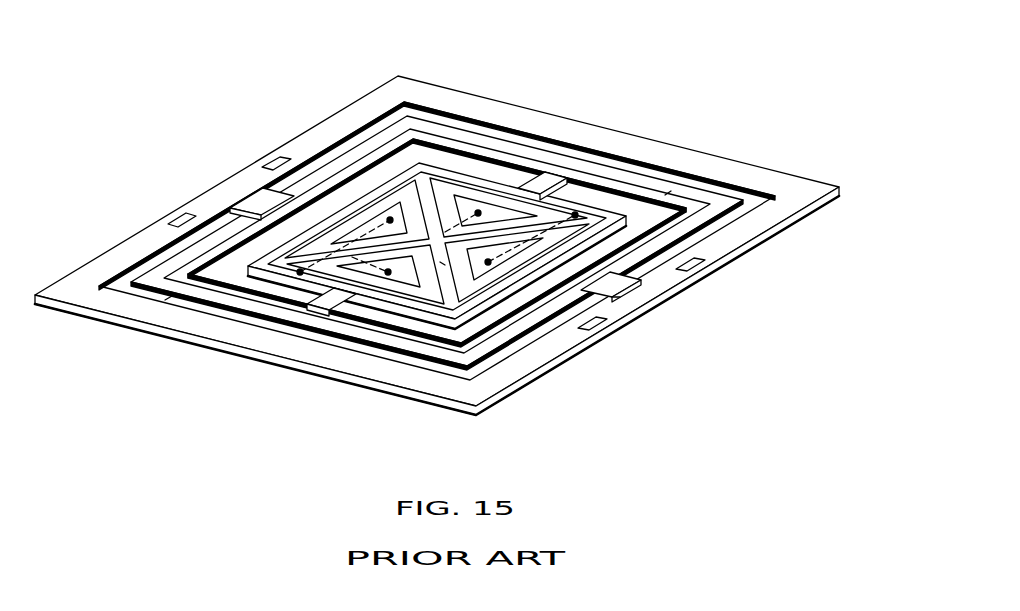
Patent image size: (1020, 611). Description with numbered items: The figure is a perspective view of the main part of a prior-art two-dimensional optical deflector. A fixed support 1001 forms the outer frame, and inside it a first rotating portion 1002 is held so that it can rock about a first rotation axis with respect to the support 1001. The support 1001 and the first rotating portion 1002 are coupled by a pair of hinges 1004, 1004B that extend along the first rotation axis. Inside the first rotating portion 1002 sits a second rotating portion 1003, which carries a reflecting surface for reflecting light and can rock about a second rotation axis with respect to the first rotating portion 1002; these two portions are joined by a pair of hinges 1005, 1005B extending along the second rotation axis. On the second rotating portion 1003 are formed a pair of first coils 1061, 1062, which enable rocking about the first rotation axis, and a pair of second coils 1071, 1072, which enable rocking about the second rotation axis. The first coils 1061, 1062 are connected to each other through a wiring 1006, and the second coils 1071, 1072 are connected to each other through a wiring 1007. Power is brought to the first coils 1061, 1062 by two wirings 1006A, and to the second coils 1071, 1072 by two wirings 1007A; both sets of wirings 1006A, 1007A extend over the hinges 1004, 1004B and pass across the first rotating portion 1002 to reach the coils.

The support 1001 is at (825, 200).
The first rotating portion 1002 is at (710, 223).
The second rotating portion 1003 is at (677, 190).
The hinge 1004 is at (650, 272).
The hinge 1004B is at (260, 195).
The hinge 1005 is at (353, 310).
The hinge 1005B is at (540, 180).
The wiring 1006 is at (430, 228).
The wirings 1006A is at (445, 265).
The first coil 1061 is at (383, 297).
The first coil 1062 is at (473, 187).
The wiring 1007 is at (453, 320).
The wirings 1007A is at (170, 298).
The second coil 1071 is at (620, 297).
The second coil 1072 is at (265, 300).